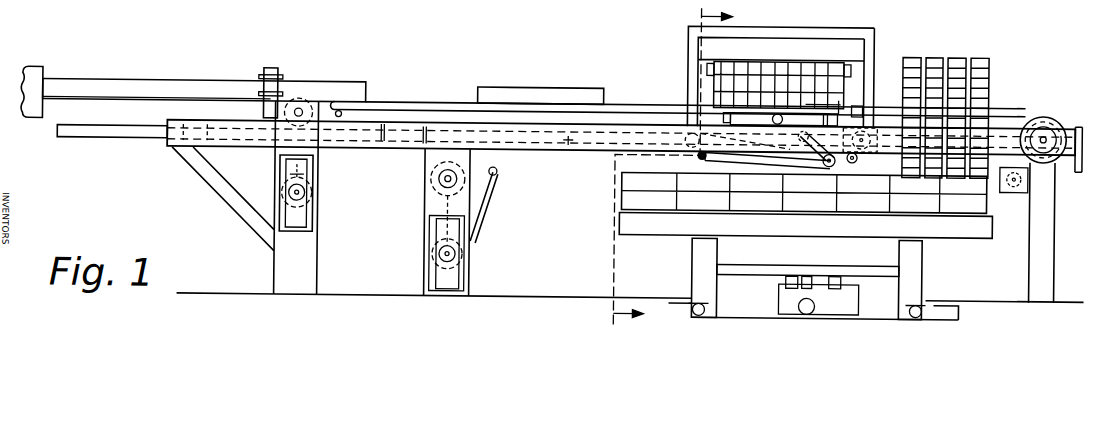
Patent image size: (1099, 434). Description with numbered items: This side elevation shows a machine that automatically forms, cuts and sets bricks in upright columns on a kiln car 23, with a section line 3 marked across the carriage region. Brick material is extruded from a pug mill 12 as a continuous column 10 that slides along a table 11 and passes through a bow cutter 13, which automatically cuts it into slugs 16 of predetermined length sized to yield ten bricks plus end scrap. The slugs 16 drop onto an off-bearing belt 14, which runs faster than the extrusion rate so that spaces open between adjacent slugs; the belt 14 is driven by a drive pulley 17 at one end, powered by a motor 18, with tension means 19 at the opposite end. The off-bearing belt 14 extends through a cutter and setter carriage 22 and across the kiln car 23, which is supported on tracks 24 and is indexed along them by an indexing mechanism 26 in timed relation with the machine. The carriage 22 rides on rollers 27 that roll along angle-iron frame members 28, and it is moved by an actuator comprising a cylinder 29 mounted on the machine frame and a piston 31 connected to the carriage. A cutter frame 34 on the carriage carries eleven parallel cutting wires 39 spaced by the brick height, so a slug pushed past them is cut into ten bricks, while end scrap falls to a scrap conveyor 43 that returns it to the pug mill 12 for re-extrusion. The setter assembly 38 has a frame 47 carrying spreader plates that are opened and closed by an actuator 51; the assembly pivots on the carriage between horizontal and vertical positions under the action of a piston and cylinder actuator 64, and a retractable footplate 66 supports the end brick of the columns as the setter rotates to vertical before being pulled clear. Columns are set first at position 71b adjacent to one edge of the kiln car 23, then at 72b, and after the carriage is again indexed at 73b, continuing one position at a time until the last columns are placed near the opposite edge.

The section line 3- 3 is at (657, 164).
The continuous column 10 is at (181, 84).
The table 11 is at (128, 105).
The pug mill 12 is at (42, 72).
The bow cutter 13 is at (279, 70).
The off-bearing belt 14 is at (411, 100).
The slugs 16 is at (524, 88).
The drive pulley 17 is at (1043, 110).
The motor 18 is at (1080, 166).
The tension means 19 is at (303, 176).
The cutter and setter carriage 22 is at (876, 38).
The kiln car 23 is at (970, 233).
The tracks 24 is at (694, 302).
The indexing mechanism 26 is at (822, 268).
The rollers 27 is at (858, 160).
The frame members 28 is at (457, 123).
The cylinder 29 is at (150, 141).
The piston 31 is at (611, 132).
The cutter frame 34 is at (763, 25).
The setter assembly 38 is at (822, 101).
The cutting wires 39 is at (800, 61).
The scrap conveyor 43 is at (524, 170).
The frame 47 is at (801, 158).
The actuator 51 is at (784, 116).
The piston and cylinder actuator 64 is at (750, 157).
The retractable footplate 66 is at (861, 107).
The column position 71b is at (985, 53).
The column position 72b is at (968, 43).
The column position 73b is at (934, 53).